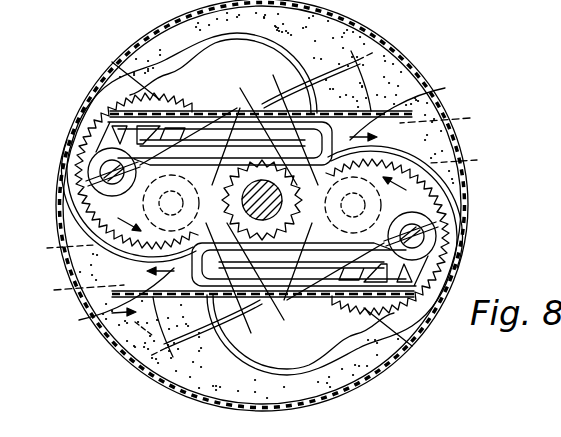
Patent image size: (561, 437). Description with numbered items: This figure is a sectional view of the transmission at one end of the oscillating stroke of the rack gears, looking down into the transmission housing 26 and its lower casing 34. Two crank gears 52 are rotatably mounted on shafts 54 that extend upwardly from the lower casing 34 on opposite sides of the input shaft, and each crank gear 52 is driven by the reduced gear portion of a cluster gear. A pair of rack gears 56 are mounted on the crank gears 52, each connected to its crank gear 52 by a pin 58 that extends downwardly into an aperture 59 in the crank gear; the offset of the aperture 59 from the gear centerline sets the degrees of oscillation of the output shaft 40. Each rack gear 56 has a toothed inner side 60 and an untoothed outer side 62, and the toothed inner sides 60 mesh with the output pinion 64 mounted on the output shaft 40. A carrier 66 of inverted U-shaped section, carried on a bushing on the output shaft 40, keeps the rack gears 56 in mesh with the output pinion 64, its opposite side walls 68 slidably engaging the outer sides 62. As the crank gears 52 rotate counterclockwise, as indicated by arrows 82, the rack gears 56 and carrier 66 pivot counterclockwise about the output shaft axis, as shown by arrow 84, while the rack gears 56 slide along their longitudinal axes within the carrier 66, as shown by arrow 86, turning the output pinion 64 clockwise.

The transmission housing 26 is at (415, 45).
The lower casing 34 is at (420, 65).
The output shaft 40 is at (445, 88).
The crank gear 52 is at (66, 148).
The shaft 54 is at (88, 172).
The rack gear 56 is at (100, 90).
The pin 58 is at (64, 193).
The aperture 59 is at (477, 160).
The toothed inner side 60 is at (240, 96).
The untoothed outer side 62 is at (288, 110).
The output pinion 64 is at (410, 147).
The carrier 66 is at (114, 64).
The side wall 68 is at (130, 52).
The arrow 82 is at (458, 181).
The arrow 84 is at (112, 313).
The arrow 86 is at (470, 118).